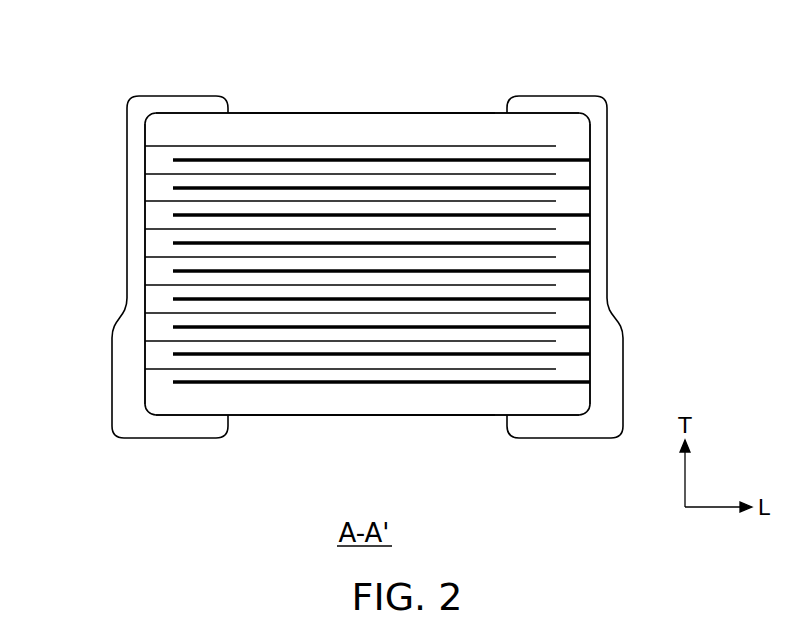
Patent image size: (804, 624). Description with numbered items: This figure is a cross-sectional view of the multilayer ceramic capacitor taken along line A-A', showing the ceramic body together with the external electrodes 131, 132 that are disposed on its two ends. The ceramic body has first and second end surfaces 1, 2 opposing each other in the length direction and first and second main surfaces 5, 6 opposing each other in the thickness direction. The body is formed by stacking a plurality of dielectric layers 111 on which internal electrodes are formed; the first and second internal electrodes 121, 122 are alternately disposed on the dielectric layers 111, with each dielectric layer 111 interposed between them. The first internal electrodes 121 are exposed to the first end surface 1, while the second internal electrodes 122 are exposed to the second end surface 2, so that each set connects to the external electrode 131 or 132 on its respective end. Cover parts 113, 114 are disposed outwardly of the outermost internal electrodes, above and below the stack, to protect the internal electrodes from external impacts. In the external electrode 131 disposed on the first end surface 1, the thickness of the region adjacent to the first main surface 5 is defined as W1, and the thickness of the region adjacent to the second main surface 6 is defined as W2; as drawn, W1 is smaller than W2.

The first end surface 1 is at (145, 222).
The second end surface 2 is at (590, 222).
The first main surface 5 is at (425, 113).
The second main surface 6 is at (443, 416).
The dielectric layer 111 is at (311, 165).
The cover part 113 is at (370, 122).
The cover part 114 is at (307, 405).
The first internal electrode 121 is at (256, 146).
The second internal electrode 122 is at (484, 158).
The external electrode 131 is at (138, 186).
The external electrode 132 is at (597, 279).
The thickness of external electrode region adjacent to first main surface W1 is at (146, 106).
The thickness of external electrode region adjacent to second main surface W2 is at (145, 418).